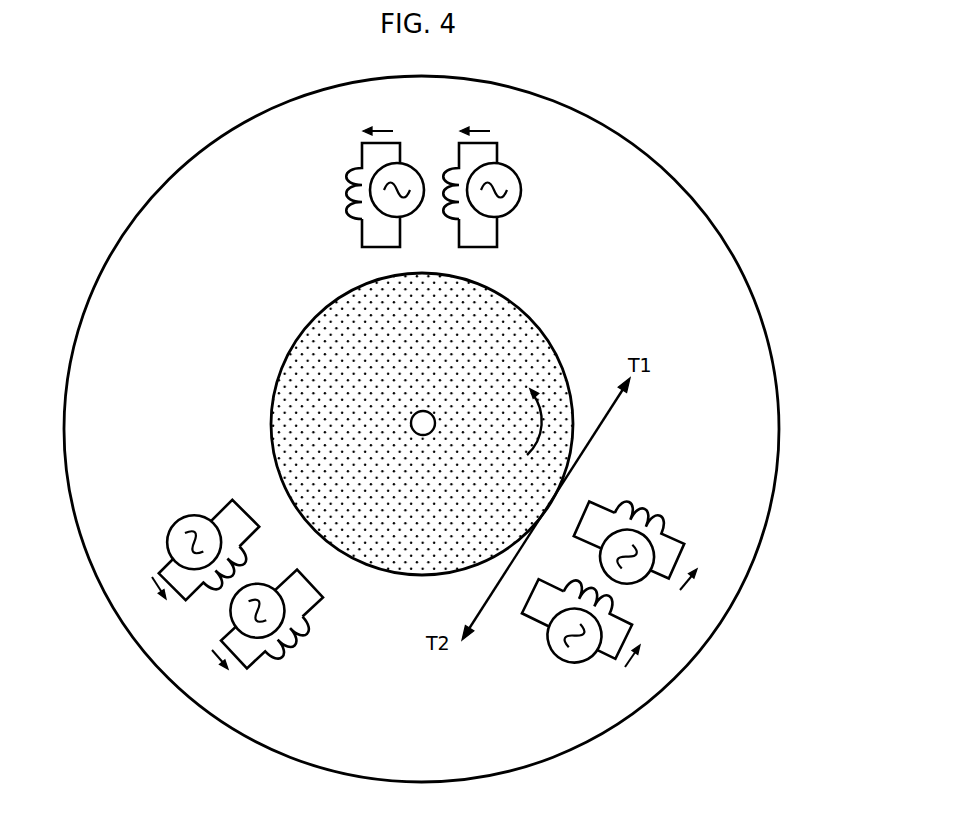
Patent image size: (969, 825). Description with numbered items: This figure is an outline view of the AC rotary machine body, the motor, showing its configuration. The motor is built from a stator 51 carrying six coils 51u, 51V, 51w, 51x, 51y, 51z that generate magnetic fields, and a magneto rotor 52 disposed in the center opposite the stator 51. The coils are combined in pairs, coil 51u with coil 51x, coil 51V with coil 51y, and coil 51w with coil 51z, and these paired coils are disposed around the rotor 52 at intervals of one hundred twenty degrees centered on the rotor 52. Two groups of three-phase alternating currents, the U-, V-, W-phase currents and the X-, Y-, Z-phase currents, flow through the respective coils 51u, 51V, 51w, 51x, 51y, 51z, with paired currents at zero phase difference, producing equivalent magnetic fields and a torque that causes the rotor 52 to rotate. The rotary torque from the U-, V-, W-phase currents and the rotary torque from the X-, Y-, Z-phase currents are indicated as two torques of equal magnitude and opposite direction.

The stator 51 is at (605, 123).
The magneto rotor 52 is at (562, 353).
The coil 51u is at (362, 237).
The coil 51x is at (497, 233).
The coil 51y is at (228, 512).
The coil 51V is at (318, 612).
The coil 51w is at (620, 503).
The coil 51z is at (578, 658).